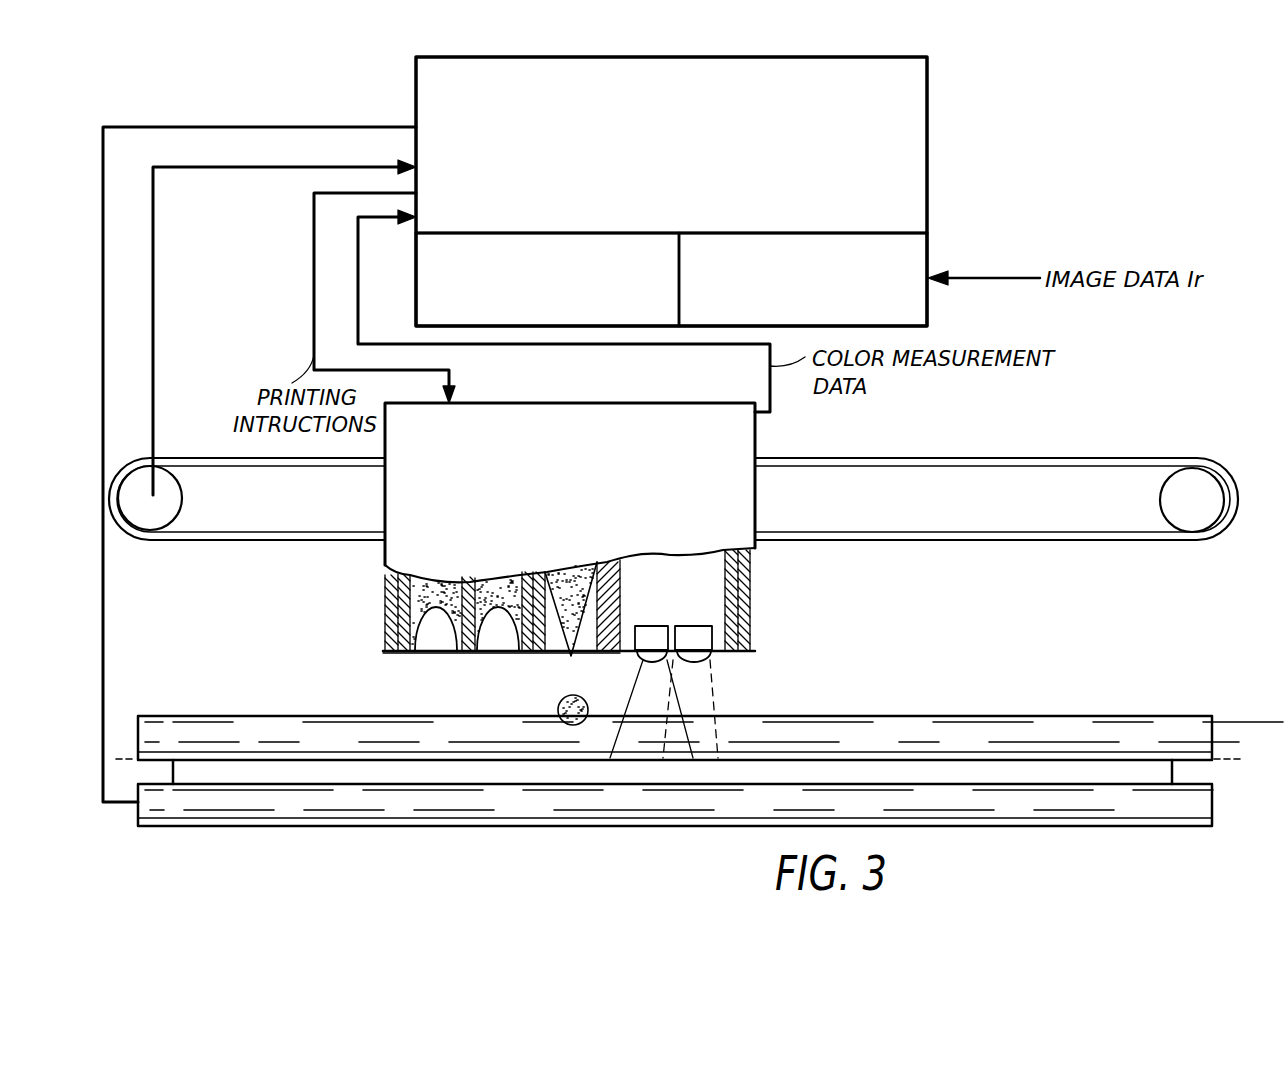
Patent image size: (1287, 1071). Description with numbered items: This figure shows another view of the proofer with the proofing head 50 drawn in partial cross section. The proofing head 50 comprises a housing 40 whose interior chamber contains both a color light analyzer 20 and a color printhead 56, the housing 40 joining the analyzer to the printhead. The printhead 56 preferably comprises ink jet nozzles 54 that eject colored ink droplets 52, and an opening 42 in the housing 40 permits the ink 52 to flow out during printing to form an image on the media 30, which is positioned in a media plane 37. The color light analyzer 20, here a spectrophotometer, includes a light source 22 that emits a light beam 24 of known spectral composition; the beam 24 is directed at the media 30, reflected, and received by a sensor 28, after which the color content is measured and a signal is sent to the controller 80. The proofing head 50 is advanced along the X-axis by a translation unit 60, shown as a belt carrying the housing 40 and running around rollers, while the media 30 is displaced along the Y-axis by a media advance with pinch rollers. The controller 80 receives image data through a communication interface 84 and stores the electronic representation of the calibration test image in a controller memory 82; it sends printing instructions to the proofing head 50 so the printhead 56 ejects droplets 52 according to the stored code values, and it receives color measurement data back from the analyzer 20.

The color light analyzer 20 is at (735, 598).
The light source 22 is at (688, 659).
The light beam 24 is at (677, 702).
The sensor 28 is at (652, 660).
The media 30 is at (710, 776).
The media plane 37 is at (1236, 758).
The housing 40 is at (571, 654).
The opening 42 is at (422, 653).
The proofing head 50 is at (755, 496).
The ink droplets 52 is at (573, 725).
The ink jet nozzles 54 is at (550, 653).
The color printhead 56 is at (400, 605).
The translation unit 60 is at (153, 520).
The controller 80 is at (918, 112).
The controller memory 82 is at (543, 240).
The communication interface 84 is at (815, 240).